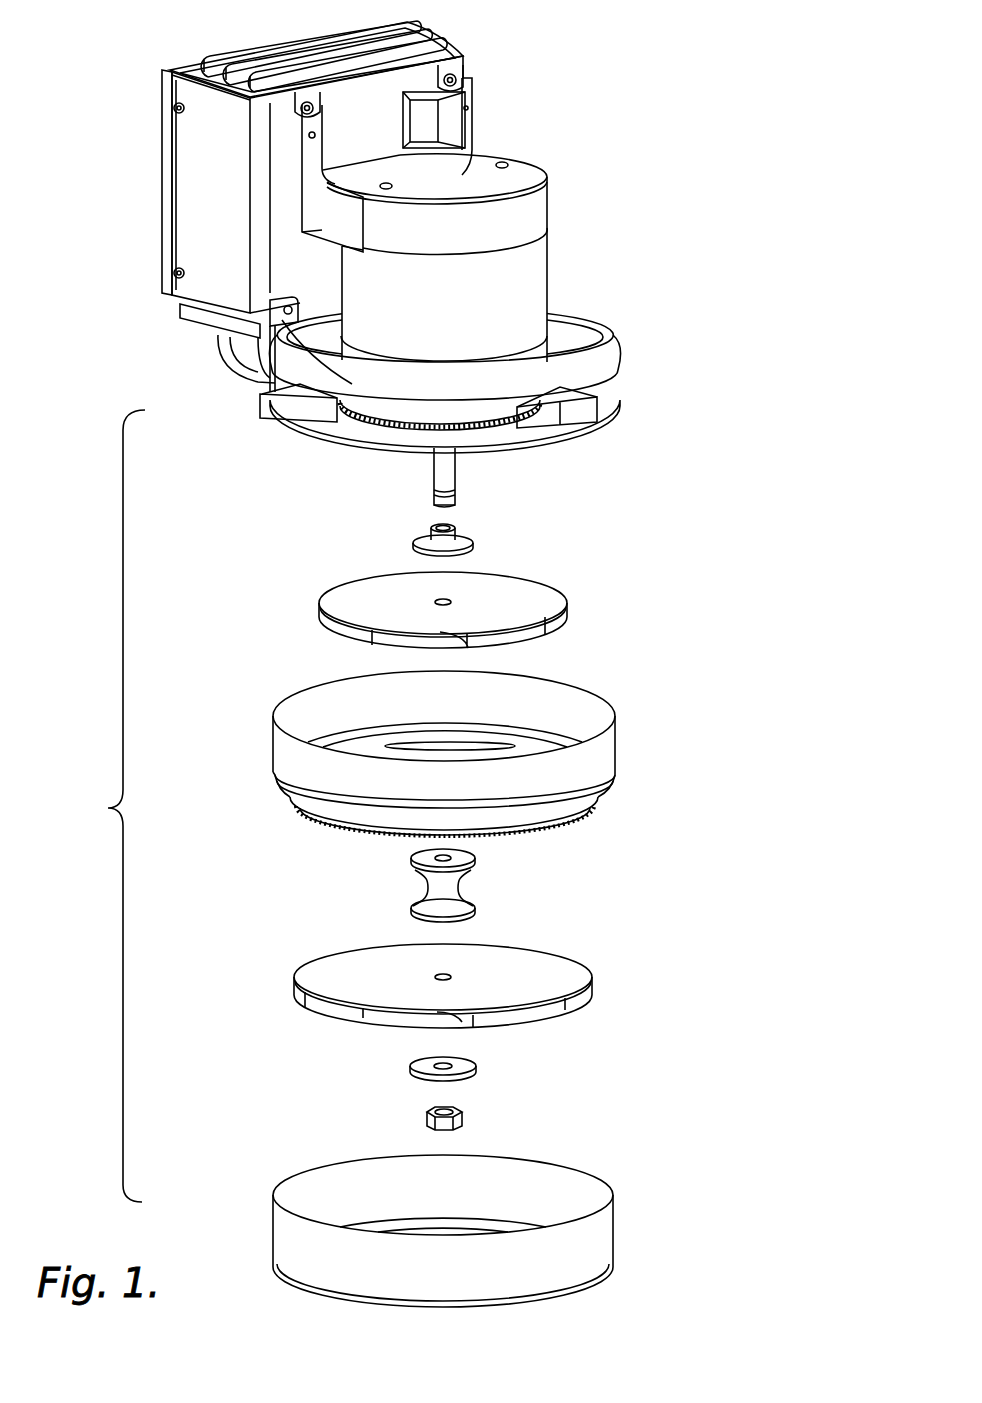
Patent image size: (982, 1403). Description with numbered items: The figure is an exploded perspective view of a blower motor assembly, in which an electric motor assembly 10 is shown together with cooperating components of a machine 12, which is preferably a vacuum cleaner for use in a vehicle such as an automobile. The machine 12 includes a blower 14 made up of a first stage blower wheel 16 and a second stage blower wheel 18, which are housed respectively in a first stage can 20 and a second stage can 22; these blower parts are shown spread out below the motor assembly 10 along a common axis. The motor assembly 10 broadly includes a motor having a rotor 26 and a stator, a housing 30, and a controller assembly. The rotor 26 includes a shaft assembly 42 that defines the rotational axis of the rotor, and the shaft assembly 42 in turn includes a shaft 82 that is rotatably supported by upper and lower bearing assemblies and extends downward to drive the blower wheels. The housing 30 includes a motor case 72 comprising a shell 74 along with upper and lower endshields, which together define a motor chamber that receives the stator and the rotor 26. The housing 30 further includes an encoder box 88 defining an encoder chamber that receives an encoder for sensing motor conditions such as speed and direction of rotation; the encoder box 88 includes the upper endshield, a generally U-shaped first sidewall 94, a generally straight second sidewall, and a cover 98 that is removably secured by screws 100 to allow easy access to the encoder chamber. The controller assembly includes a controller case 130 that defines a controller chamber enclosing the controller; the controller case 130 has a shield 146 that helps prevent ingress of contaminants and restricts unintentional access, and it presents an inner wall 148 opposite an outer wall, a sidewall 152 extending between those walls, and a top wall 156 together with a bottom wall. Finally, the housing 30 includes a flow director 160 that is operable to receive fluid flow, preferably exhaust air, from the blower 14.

The electric motor assembly 10 is at (563, 65).
The machine 12 is at (690, 578).
The blower 14 is at (573, 568).
The first stage blower wheel 16 is at (575, 977).
The second stage blower wheel 18 is at (553, 602).
The first stage can 20 is at (583, 1200).
The second stage can 22 is at (585, 758).
The rotor 26 is at (427, 458).
The housing 30 is at (565, 233).
The shaft assembly 42 is at (427, 475).
The motor case 72 is at (555, 285).
The shell 74 is at (532, 313).
The shaft 82 is at (447, 472).
The encoder box 88 is at (543, 172).
The first sidewall 94 is at (532, 208).
The cover 98 is at (477, 162).
The screws 100 is at (497, 166).
The controller case 130 is at (153, 300).
The shield 146 is at (232, 52).
The inner wall 148 is at (293, 258).
The sidewall 152 is at (193, 177).
The top wall 156 is at (466, 52).
The flow director 160 is at (212, 353).